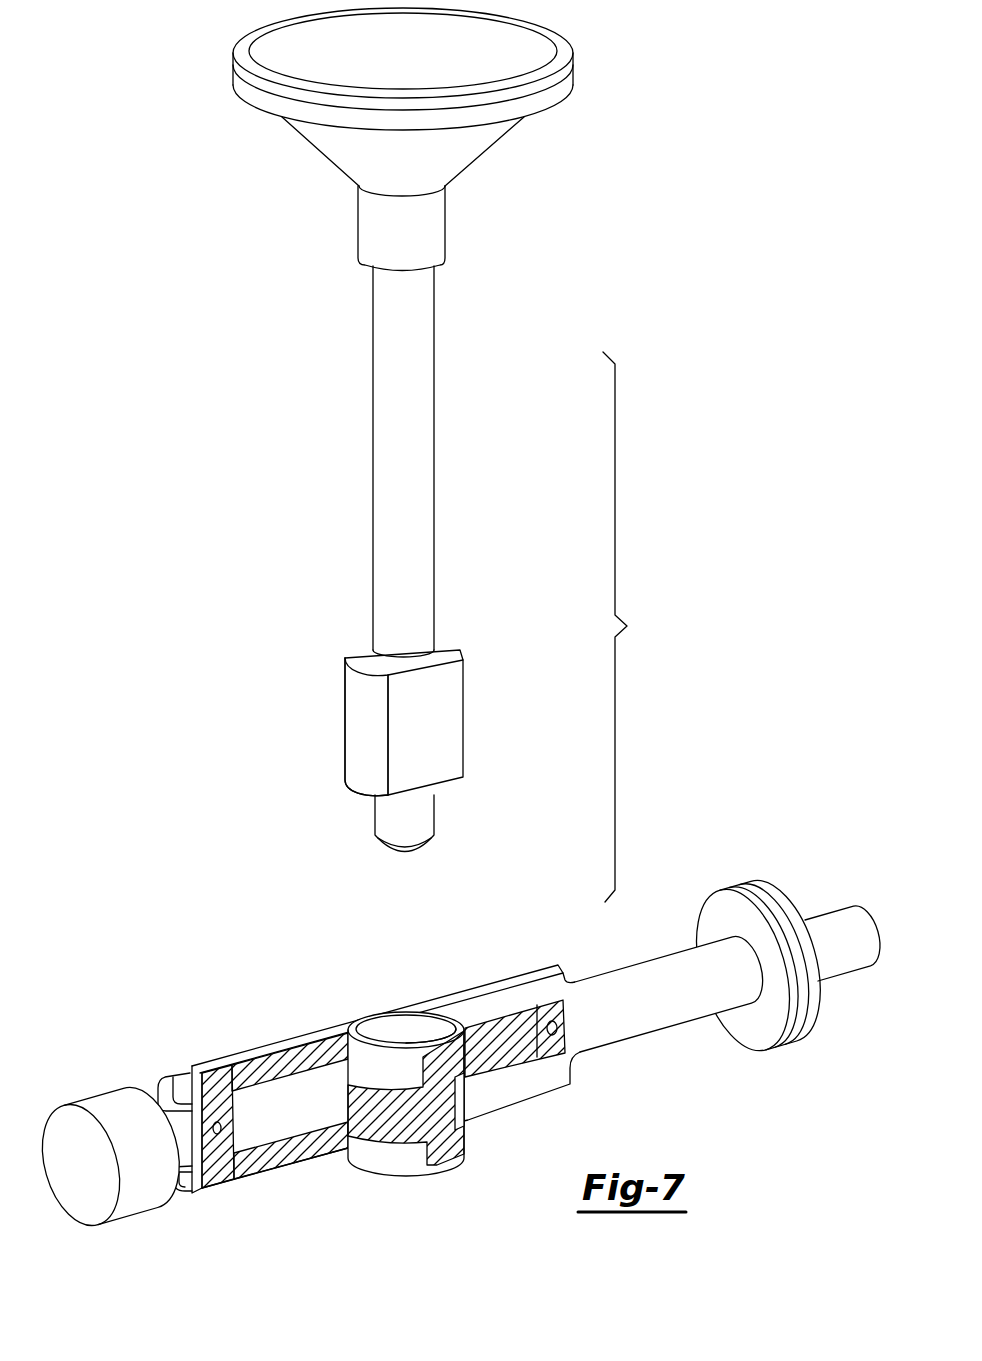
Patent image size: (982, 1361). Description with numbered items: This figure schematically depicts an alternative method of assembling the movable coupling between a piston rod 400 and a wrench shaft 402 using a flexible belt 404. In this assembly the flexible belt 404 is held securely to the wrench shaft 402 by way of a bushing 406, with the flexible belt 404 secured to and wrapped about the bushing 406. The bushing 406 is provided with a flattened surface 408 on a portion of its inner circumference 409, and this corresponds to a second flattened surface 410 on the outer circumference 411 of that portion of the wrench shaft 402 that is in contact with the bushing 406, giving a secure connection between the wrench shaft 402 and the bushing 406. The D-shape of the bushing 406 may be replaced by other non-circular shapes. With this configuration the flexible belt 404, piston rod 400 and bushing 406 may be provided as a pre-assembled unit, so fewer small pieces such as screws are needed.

The piston rod 400 is at (168, 1088).
The wrench shaft 402 is at (415, 508).
The flexible belt 404 is at (262, 1158).
The bushing 406 is at (352, 1032).
The flattened surface 408 is at (422, 1030).
The inner circumference 409 is at (385, 1030).
The second flattened surface 410 is at (443, 745).
The outer circumference 411 is at (365, 758).